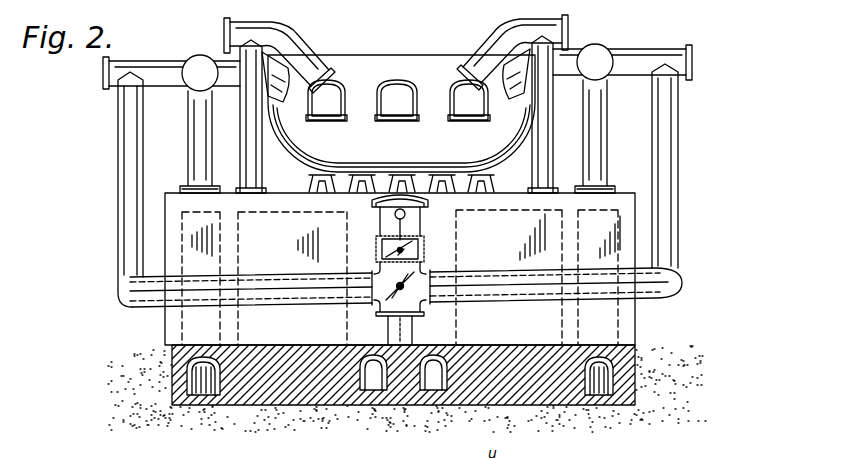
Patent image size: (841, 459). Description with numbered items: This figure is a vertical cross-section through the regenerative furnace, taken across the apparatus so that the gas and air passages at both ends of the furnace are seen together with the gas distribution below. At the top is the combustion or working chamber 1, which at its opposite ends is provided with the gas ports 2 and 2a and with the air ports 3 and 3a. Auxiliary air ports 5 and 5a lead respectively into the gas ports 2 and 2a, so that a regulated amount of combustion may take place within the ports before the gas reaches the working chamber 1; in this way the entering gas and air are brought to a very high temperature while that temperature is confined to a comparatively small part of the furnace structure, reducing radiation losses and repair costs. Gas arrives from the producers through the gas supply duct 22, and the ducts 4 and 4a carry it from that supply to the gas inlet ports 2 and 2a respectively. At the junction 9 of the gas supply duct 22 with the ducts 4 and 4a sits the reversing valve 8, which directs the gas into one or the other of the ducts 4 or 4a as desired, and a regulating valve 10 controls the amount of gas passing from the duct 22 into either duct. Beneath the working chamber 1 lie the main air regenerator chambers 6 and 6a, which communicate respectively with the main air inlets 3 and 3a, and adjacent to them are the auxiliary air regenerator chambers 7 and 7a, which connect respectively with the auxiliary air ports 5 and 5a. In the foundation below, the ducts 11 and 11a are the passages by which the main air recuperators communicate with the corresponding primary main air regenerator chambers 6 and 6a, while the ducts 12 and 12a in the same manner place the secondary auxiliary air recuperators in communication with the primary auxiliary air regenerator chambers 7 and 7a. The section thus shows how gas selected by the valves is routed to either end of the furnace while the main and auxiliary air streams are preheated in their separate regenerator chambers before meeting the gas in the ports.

The combustion or working chamber 1 is at (409, 63).
The gas port 2 is at (160, 61).
The gas port 2a is at (636, 45).
The air port 3 is at (300, 42).
The air port 3a is at (472, 60).
The duct 4 is at (120, 212).
The duct 4a is at (674, 139).
The auxiliary air port 5 is at (192, 136).
The auxiliary air port 5a is at (602, 125).
The main air regenerator chamber 6 is at (246, 220).
The main air regenerator chamber 6a is at (497, 213).
The auxiliary air regenerator chamber 7 is at (182, 222).
The auxiliary air regenerator chamber 7a is at (607, 207).
The reversing valve 8 is at (418, 298).
The junction 9 is at (376, 294).
The regulating valve 10 is at (405, 254).
The duct 11 is at (376, 380).
The duct 11a is at (437, 380).
The duct 12 is at (170, 398).
The duct 12a is at (613, 378).
The gas supply duct 22 is at (418, 232).